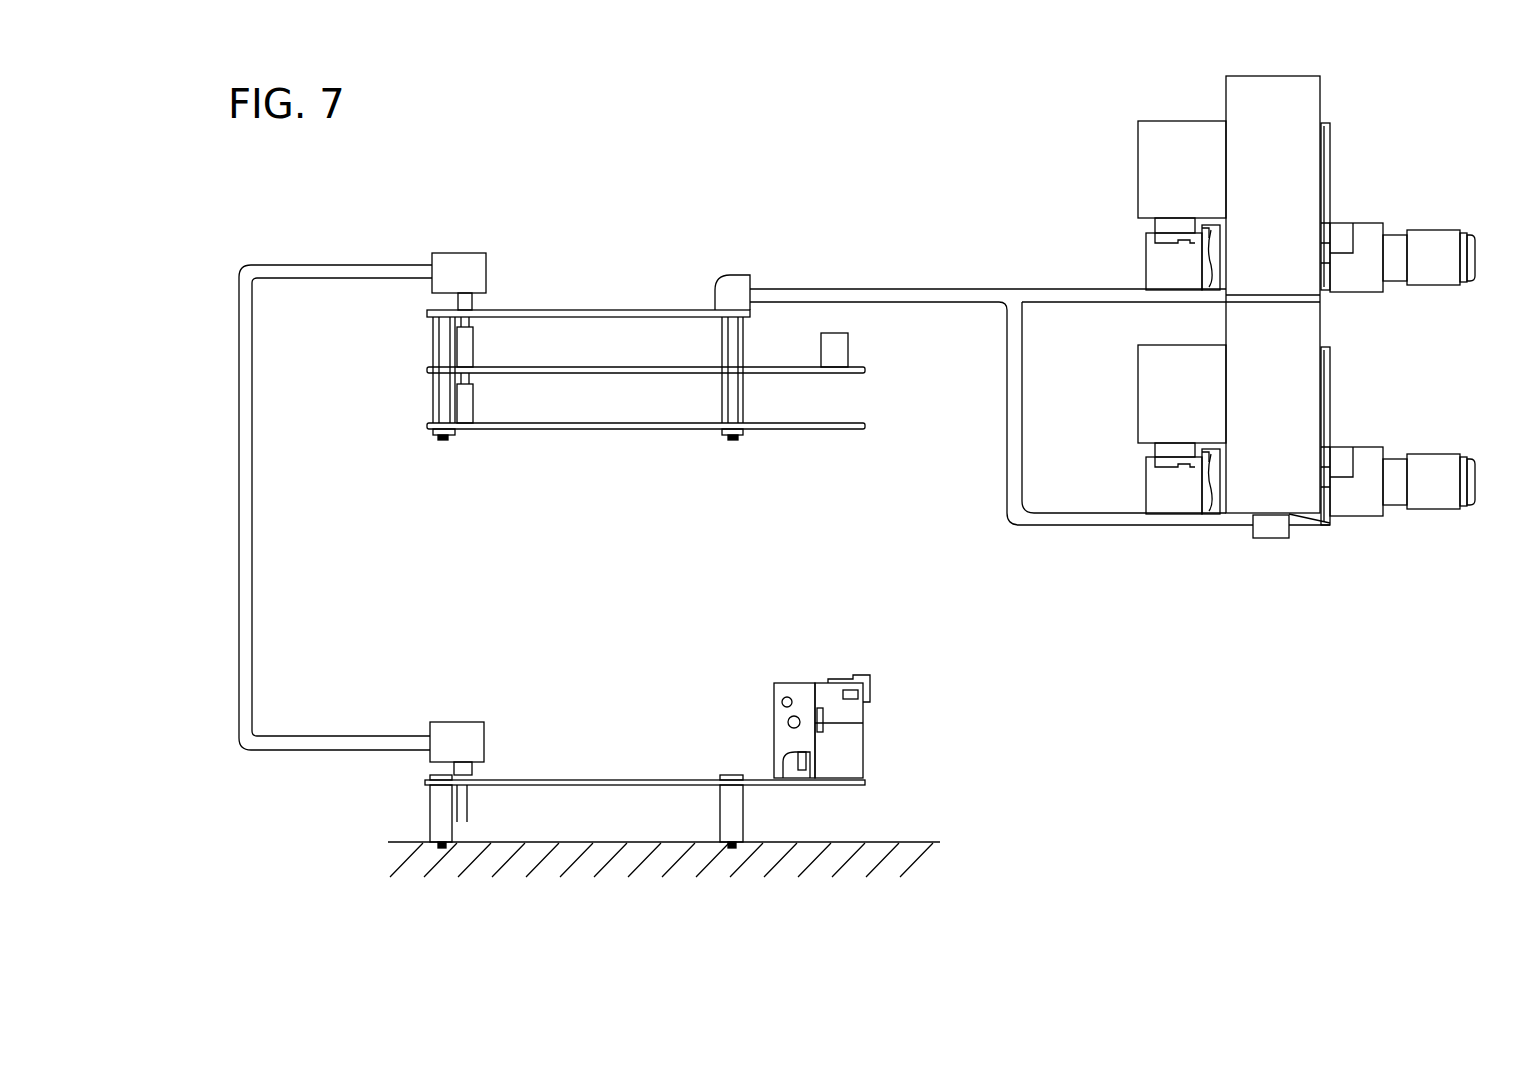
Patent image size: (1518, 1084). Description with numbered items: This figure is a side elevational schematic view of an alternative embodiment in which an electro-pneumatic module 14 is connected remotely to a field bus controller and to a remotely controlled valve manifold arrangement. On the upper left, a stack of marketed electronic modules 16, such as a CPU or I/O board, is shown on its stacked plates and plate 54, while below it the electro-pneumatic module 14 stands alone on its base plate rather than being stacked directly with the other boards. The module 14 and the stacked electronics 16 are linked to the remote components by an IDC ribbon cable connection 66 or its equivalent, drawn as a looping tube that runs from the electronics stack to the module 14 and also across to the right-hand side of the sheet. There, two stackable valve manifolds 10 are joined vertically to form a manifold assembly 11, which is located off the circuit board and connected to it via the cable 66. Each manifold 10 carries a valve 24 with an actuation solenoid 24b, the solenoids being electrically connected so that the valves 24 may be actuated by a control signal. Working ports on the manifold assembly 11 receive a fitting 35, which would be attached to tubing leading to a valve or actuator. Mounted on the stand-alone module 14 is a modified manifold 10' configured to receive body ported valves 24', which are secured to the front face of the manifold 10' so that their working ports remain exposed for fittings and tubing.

The stackable valve manifold 10 is at (1268, 337).
The modified manifold 10' is at (742, 723).
The manifold assembly 11 is at (1406, 237).
The electro-pneumatic module 14 is at (641, 780).
The electronic module 16 is at (611, 429).
The valve 24 is at (1136, 429).
The actuation solenoid 24b is at (1148, 155).
The valve 24' is at (910, 726).
The fitting 35 is at (1437, 272).
The plate 54 is at (865, 369).
The IDC (ribbon cable) connection 66 is at (932, 298).